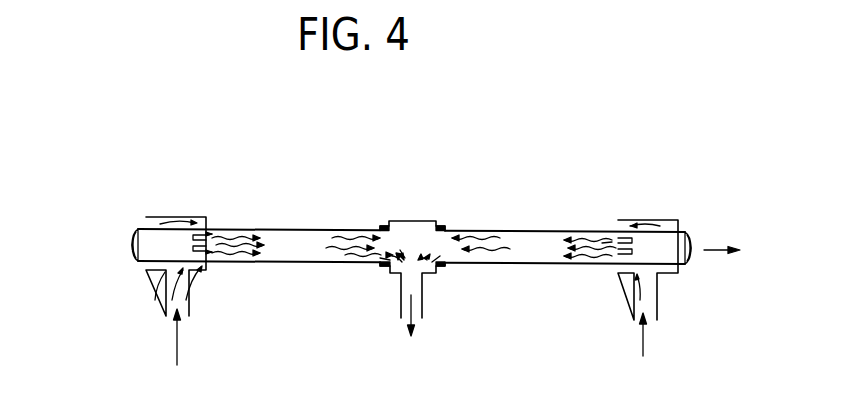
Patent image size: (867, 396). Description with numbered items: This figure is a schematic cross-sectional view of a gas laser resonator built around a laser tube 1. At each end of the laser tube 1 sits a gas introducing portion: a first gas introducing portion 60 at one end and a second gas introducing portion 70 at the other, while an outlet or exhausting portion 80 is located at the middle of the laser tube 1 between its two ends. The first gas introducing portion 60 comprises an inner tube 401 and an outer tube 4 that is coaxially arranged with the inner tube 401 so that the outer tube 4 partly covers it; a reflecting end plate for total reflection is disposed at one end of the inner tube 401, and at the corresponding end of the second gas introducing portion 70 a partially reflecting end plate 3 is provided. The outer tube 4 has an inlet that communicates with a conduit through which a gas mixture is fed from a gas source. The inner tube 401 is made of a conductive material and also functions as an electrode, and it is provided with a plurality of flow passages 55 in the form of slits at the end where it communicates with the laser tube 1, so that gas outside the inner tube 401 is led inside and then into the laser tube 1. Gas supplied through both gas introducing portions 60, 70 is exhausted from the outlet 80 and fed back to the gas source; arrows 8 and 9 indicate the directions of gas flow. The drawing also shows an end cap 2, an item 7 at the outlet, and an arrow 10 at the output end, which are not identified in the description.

The laser tube 1 is at (313, 229).
The left end cap 2 is at (131, 236).
The partially reflecting end plate 3 is at (698, 234).
The outer tube 4 is at (165, 216).
The middle outlet fitting 7 is at (388, 268).
The arrow 8 is at (178, 347).
The arrow 9 is at (414, 315).
The outflow direction 10 is at (704, 253).
The flow passages 55 is at (207, 267).
The first gas introducing portion 60 is at (160, 180).
The second gas introducing portion 70 is at (655, 206).
The outlet or exhausting portion 80 is at (415, 206).
The inner tube 401 is at (153, 272).